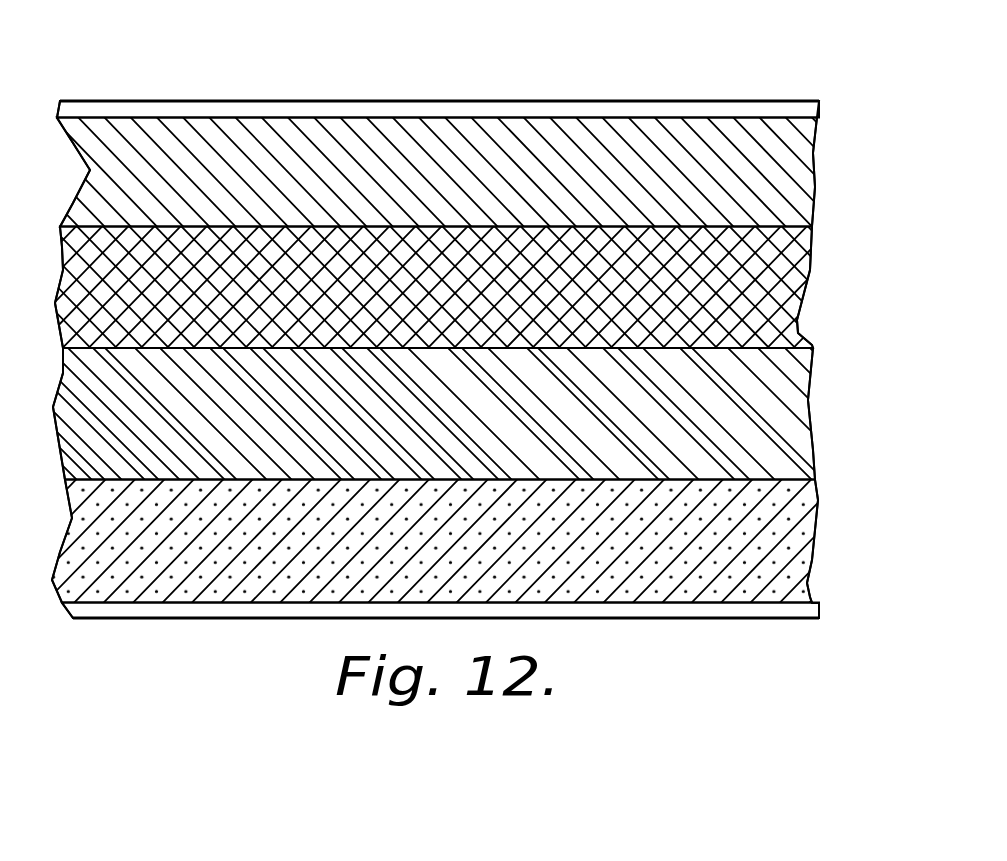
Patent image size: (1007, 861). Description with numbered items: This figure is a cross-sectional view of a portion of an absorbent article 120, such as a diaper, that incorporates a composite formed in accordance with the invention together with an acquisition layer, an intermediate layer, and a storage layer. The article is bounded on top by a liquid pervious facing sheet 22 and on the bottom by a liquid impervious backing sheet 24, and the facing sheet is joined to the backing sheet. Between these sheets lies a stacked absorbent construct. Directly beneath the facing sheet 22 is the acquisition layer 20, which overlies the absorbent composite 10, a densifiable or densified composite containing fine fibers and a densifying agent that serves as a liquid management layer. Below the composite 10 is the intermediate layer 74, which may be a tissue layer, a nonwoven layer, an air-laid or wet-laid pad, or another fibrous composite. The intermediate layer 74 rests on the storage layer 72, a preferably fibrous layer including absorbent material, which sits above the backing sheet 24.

The absorbent article 120 is at (503, 90).
The liquid pervious facing sheet 22 is at (775, 105).
The acquisition layer 20 is at (780, 137).
The absorbent composite 10 is at (773, 258).
The intermediate layer 74 is at (777, 403).
The storage layer 72 is at (775, 542).
The liquid impervious backing sheet 24 is at (777, 610).